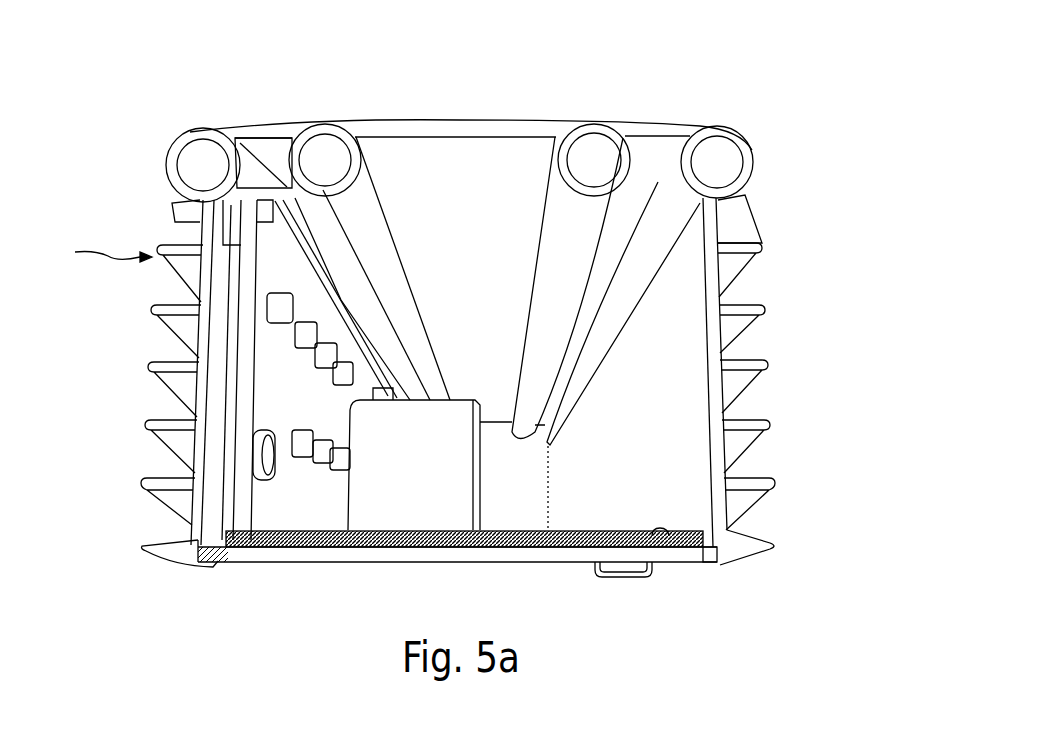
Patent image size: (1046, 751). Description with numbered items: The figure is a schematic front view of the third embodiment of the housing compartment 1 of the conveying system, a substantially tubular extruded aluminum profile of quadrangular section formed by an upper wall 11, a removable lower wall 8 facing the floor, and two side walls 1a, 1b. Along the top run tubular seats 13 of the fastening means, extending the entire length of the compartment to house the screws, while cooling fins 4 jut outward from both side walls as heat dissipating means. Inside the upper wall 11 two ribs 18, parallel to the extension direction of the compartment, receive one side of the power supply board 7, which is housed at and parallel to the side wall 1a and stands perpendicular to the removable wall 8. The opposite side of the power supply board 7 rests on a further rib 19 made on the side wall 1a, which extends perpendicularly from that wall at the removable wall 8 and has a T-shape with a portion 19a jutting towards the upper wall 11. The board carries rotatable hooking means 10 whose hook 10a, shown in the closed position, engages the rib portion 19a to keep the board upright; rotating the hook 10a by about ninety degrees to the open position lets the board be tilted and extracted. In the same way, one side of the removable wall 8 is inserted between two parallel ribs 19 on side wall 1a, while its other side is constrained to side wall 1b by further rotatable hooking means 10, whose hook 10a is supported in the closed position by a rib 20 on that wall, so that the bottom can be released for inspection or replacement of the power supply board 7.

The housing compartment 1 is at (820, 123).
The side wall 1a is at (222, 337).
The side wall 1b is at (687, 347).
The cooling fin 4 is at (768, 308).
The power supply board 7 is at (222, 478).
The removable wall 8 is at (362, 550).
The rotatable hooking means 10 is at (259, 413).
The hook 10a is at (245, 450).
The upper wall 11 is at (446, 120).
The seats of the fastening means 13 is at (203, 157).
The ribs 18 is at (240, 186).
The rib 19 is at (213, 566).
The rib portion 19a is at (205, 520).
The rib 20 is at (705, 562).